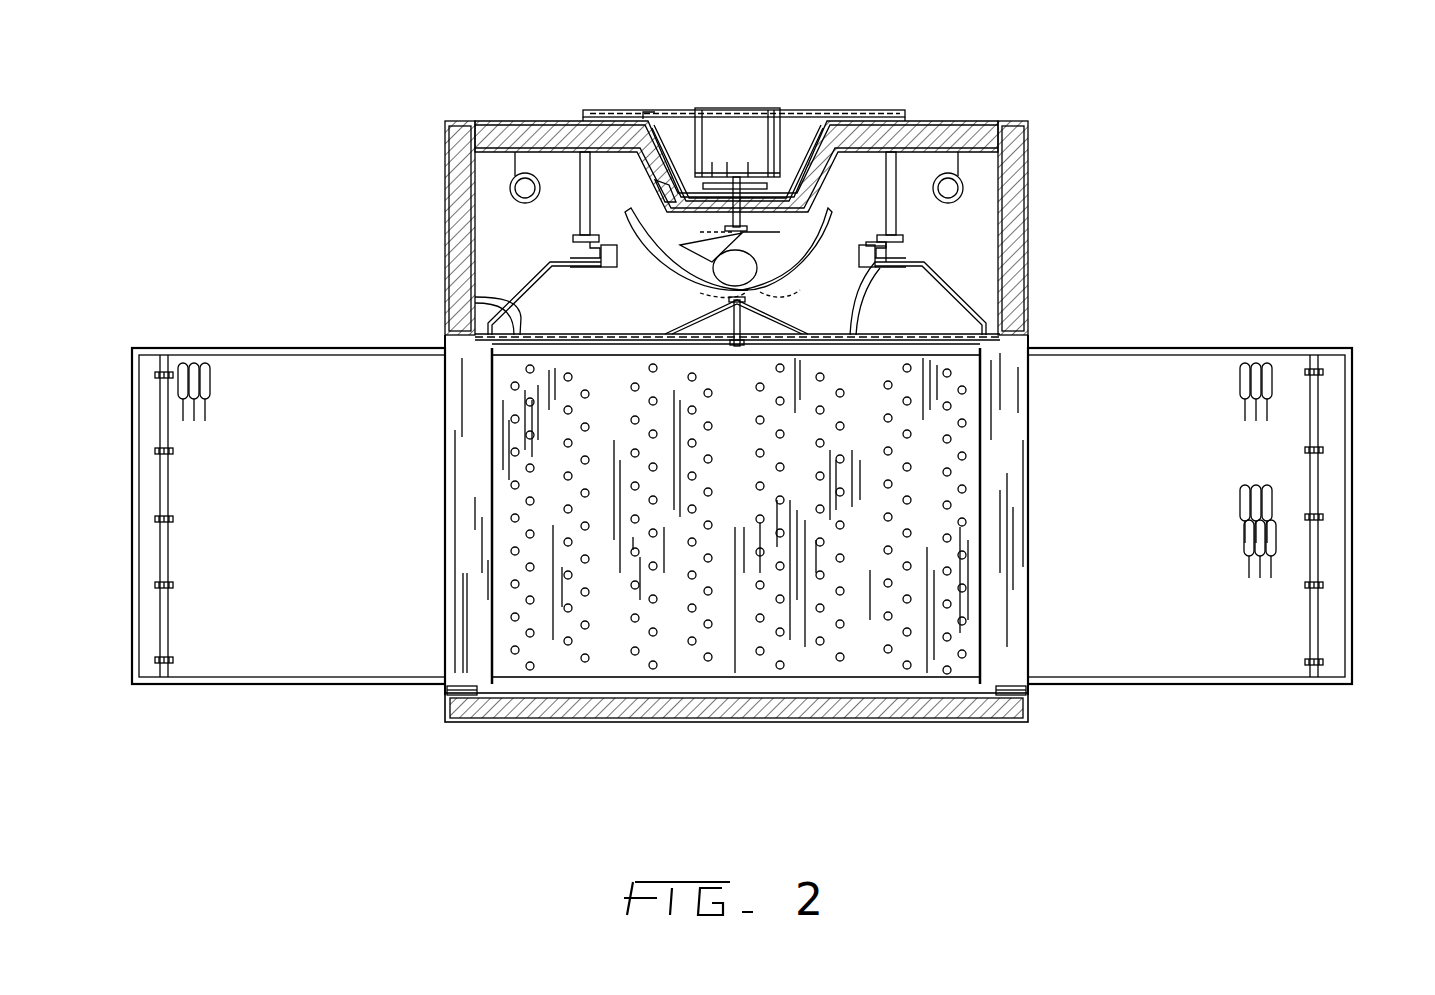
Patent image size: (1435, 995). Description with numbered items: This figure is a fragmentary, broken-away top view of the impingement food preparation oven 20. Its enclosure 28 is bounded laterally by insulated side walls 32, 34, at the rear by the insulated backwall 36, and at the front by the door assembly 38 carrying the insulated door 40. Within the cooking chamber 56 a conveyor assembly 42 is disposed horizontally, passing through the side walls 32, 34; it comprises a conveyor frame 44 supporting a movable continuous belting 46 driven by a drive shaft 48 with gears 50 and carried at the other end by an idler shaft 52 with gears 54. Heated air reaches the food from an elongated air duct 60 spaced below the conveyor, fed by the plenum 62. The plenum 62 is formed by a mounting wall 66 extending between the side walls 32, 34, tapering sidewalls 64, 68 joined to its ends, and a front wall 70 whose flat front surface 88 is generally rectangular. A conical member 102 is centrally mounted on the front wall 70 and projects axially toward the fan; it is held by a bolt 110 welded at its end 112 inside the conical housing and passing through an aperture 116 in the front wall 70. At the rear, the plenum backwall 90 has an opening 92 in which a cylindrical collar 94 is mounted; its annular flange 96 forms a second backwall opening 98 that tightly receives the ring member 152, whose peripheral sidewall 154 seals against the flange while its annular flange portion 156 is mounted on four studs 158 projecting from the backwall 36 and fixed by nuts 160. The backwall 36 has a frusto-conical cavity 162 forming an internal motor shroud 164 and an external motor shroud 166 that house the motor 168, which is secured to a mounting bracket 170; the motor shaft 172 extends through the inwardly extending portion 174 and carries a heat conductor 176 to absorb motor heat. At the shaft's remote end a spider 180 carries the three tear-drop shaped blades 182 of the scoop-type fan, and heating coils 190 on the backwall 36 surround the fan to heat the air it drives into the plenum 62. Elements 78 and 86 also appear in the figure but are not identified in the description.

The impingement food preparation oven 20 is at (1155, 215).
The enclosure 28 is at (737, 376).
The insulated side wall 32 is at (445, 236).
The insulated side wall 34 is at (1028, 186).
The insulated backwall 36 is at (955, 121).
The door assembly 38 is at (495, 725).
The insulated door 40 is at (805, 724).
The conveyor assembly 42 is at (175, 338).
The conveyor frame 44 is at (265, 348).
The continuous belting 46 is at (196, 404).
The drive shaft 48 is at (1312, 415).
The gears 50 is at (1323, 374).
The idler shaft 52 is at (170, 566).
The gears 54 is at (155, 378).
The cooking chamber 56 is at (488, 512).
The elongated air duct 60 is at (1008, 506).
The plenum 62 is at (528, 308).
The tapering sidewall 64 is at (985, 292).
The mounting wall 66 is at (862, 335).
The tapering sidewall 68 is at (535, 270).
The front wall 70 is at (500, 307).
The perforations 78 is at (650, 434).
The perforated panel surface 86 is at (718, 395).
The flat front surface 88 is at (850, 335).
The backwall 90 is at (563, 262).
The opening 92 is at (600, 268).
The cylindrical collar 94 is at (607, 232).
The annular flange 96 is at (868, 236).
The second backwall opening 98 is at (855, 246).
The conical member 102 is at (670, 321).
The bolt 110 is at (775, 320).
The bolt end 112 is at (490, 348).
The aperture 116 is at (645, 350).
The ring member 152 is at (663, 165).
The peripheral sidewall 154 is at (822, 243).
The annular flange portion 156 is at (884, 240).
The studs 158 is at (580, 192).
The nuts 160 is at (890, 250).
The cavity 162 is at (788, 122).
The internal motor shroud 164 is at (674, 192).
The external motor shroud 166 is at (650, 150).
The motor 168 is at (735, 128).
The mounting bracket 170 is at (870, 110).
The motor shaft 172 is at (808, 152).
The inwardly extending portion 174 is at (680, 183).
The heat conductor 176 is at (740, 183).
The spider 180 is at (720, 256).
The blades 182 is at (717, 298).
The heating coils 190 is at (510, 188).